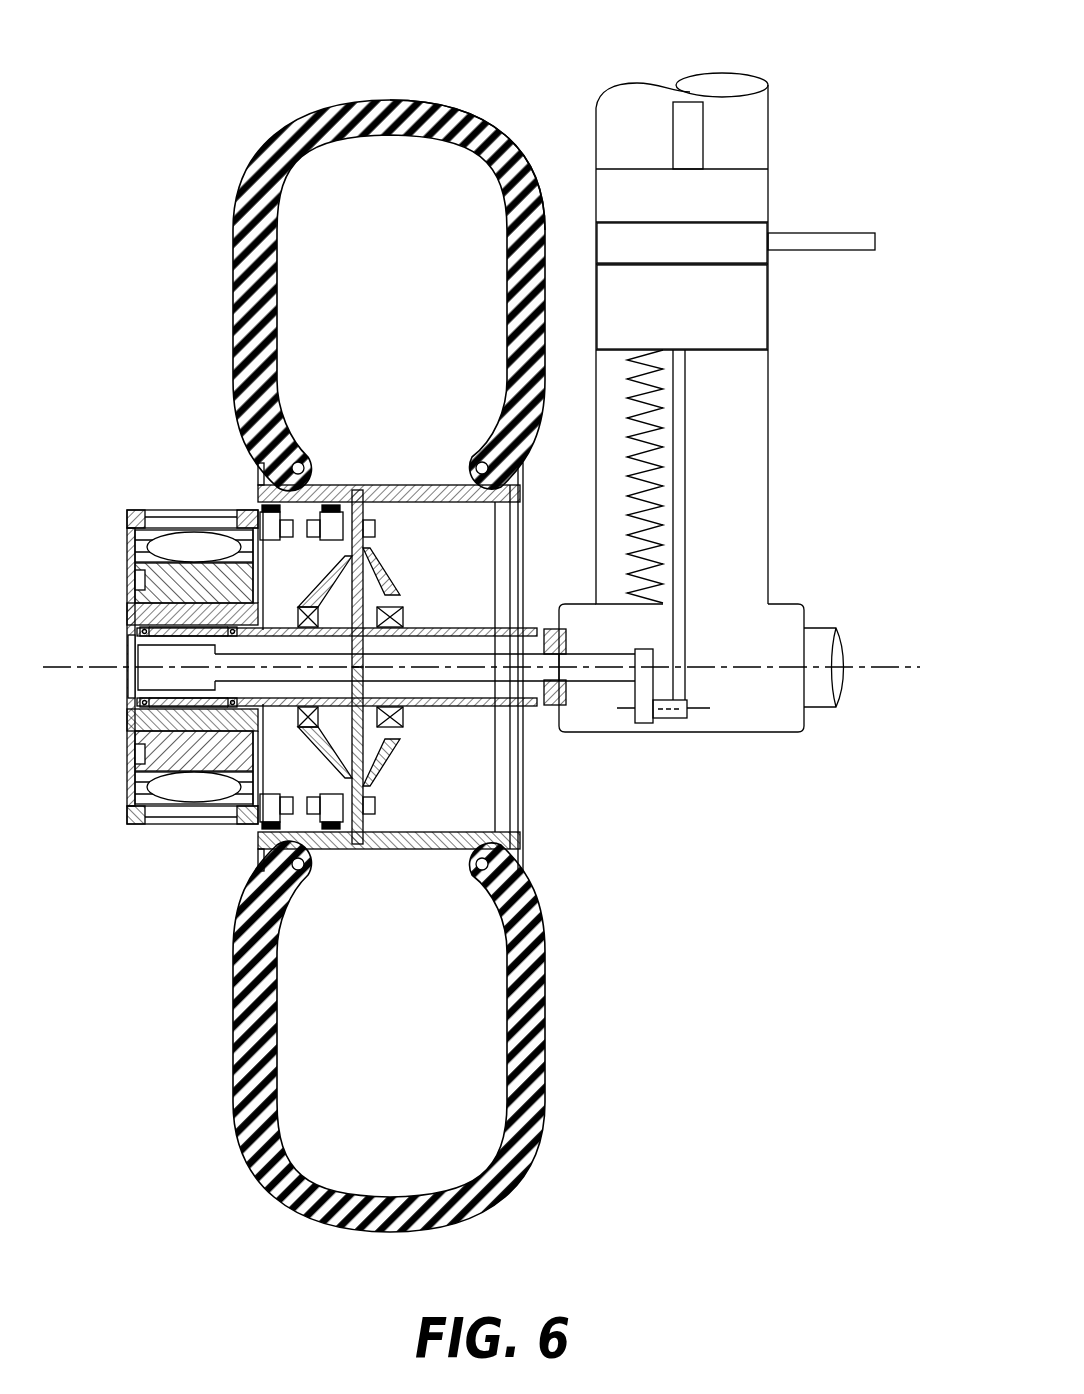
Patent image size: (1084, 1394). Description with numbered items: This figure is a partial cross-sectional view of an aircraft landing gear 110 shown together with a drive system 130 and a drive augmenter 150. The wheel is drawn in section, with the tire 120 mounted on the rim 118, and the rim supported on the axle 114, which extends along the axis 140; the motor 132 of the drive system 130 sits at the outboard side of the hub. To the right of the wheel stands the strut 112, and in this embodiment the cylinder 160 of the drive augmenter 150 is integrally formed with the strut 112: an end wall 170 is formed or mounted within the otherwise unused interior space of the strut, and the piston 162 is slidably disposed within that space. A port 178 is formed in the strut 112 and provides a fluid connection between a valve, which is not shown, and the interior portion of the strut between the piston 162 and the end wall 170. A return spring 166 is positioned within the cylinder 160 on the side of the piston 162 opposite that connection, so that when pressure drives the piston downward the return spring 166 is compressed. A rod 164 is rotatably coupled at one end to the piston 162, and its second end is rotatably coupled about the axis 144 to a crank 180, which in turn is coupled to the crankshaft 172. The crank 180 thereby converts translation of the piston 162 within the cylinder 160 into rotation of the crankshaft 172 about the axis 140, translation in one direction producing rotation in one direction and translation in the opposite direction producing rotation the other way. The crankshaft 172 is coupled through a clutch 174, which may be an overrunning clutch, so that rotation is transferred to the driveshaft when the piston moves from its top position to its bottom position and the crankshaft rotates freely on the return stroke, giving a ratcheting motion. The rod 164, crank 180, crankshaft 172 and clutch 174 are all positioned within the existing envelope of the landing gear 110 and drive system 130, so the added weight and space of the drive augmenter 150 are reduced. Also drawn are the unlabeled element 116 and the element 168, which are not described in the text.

The landing gear 110 is at (882, 92).
The strut 112 is at (808, 407).
The axle 114 is at (532, 618).
The wheel 116 is at (516, 117).
The rim 118 is at (527, 803).
The tire 120 is at (262, 128).
The drive system 130 is at (181, 838).
The motor 132 is at (128, 742).
The axis 140 is at (908, 664).
The axis 144 is at (702, 720).
The drive augmenter 150 is at (760, 451).
The cylinder 160 is at (768, 497).
The piston 162 is at (760, 302).
The rod 164 is at (688, 570).
The return spring 166 is at (640, 422).
The piston 168 is at (648, 244).
The end wall 170 is at (760, 191).
The crankshaft 172 is at (528, 700).
The clutch 174 is at (145, 674).
The port 178 is at (870, 235).
The crank 180 is at (629, 716).